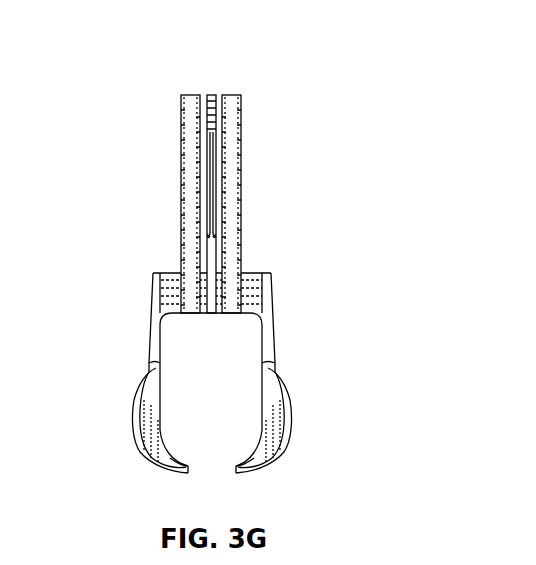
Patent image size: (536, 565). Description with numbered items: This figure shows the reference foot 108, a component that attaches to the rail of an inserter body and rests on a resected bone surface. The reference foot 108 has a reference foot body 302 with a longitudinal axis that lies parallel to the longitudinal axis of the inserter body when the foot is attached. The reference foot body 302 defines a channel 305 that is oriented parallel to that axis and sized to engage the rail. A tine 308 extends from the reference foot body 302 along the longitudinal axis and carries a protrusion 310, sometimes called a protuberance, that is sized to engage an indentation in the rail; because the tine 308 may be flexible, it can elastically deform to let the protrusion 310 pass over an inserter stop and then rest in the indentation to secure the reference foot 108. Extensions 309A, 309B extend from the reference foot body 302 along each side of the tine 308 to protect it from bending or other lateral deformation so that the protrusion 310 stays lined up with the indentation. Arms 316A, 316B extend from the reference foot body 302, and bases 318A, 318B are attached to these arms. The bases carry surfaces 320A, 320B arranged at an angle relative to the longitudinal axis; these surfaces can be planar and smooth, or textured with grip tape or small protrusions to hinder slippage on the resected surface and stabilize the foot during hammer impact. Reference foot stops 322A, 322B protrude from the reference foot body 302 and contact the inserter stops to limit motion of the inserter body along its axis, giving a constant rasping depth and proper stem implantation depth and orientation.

The reference foot 108 is at (104, 30).
The reference foot body 302 is at (213, 287).
The channel 305 is at (209, 336).
The tine 308 is at (212, 213).
The extension 309A is at (182, 156).
The extension 309B is at (238, 155).
The protrusion 310 is at (214, 110).
The arm 316A is at (150, 347).
The arm 316B is at (270, 350).
The base 318A is at (283, 375).
The base 318B is at (135, 393).
The surface 320A is at (143, 454).
The surface 320B is at (272, 454).
The reference foot stop 322A is at (160, 292).
The reference foot stop 322B is at (257, 287).